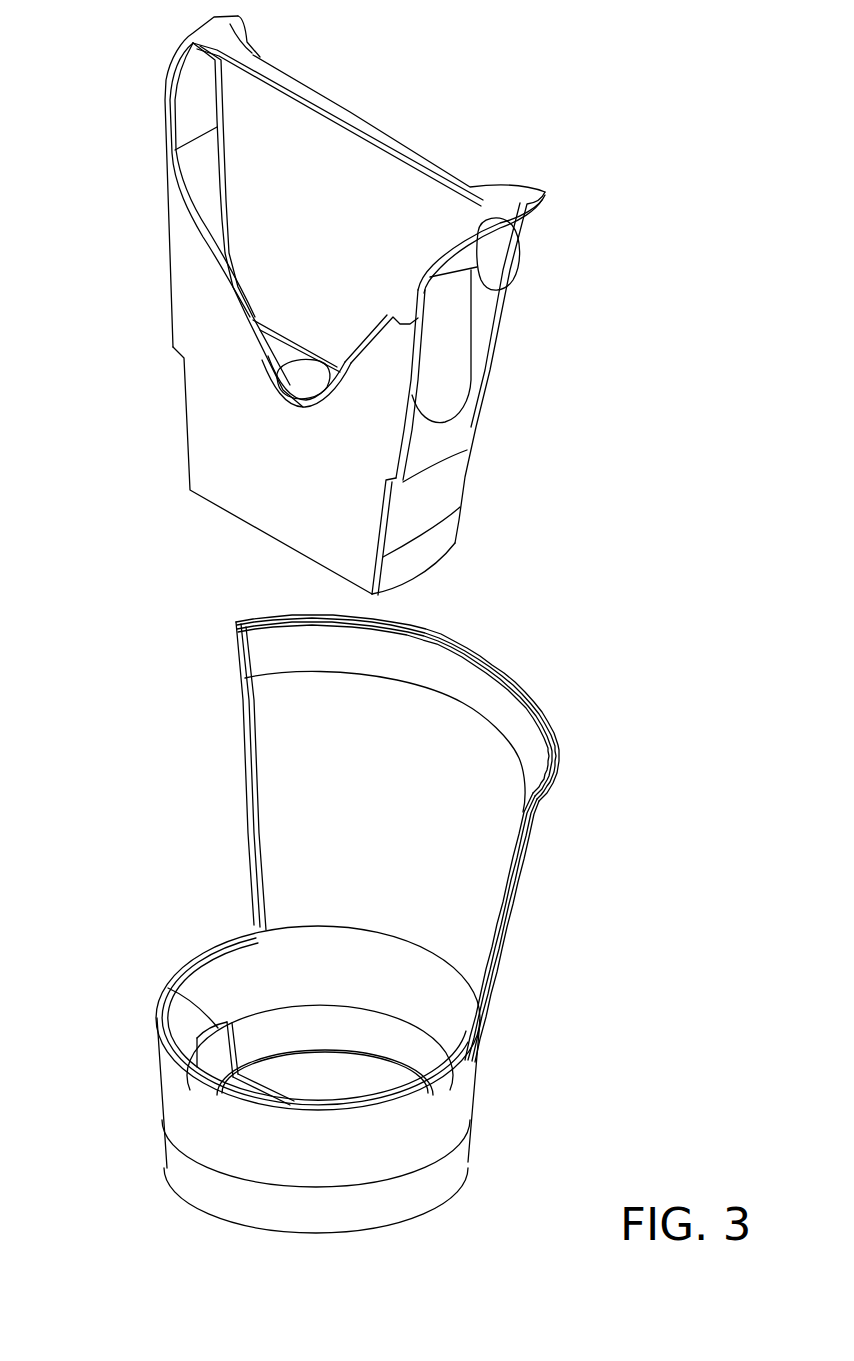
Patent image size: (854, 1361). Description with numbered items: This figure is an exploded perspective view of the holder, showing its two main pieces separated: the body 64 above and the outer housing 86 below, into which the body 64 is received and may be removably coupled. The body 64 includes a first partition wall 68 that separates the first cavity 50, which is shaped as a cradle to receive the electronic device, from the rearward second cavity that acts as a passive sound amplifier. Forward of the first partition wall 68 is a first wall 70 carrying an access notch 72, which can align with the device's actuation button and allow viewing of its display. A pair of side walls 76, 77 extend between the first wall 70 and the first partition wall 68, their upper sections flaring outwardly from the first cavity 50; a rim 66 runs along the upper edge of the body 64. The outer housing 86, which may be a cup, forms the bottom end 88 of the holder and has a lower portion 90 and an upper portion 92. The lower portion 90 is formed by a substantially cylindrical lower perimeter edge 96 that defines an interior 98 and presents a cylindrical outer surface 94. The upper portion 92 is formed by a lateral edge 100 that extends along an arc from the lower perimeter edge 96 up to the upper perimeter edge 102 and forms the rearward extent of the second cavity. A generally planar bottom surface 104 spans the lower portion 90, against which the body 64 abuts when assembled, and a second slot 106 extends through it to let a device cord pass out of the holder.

The first cavity 50 is at (262, 178).
The body 64 is at (530, 365).
The sloped rim 66 is at (347, 113).
The first partition wall 68 is at (310, 230).
The first wall 70 is at (262, 456).
The access notch 72 is at (245, 349).
The side wall 76 is at (165, 114).
The side wall 77 is at (470, 213).
The outer housing 86 is at (543, 955).
The bottom end 88 is at (402, 1221).
The lower portion 90 is at (500, 1092).
The upper portion 92 is at (600, 737).
The outer surface 94 is at (433, 1127).
The lower perimeter edge 96 is at (161, 1032).
The interior 98 is at (258, 964).
The lateral edge 100 is at (523, 857).
The upper perimeter edge 102 is at (500, 667).
The generally planar bottom surface 104 is at (340, 1090).
The second slot 106 is at (165, 987).